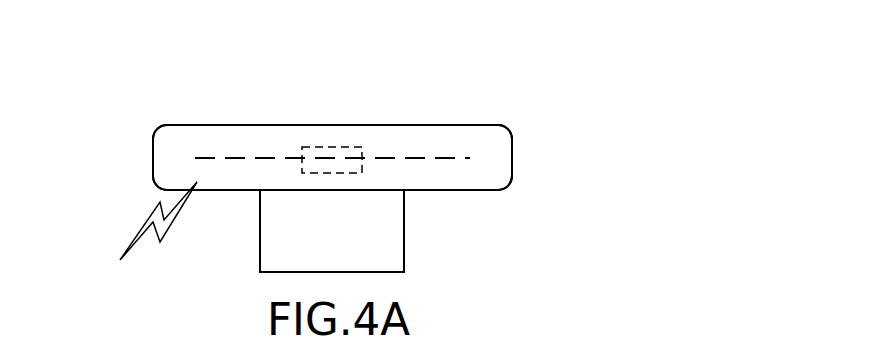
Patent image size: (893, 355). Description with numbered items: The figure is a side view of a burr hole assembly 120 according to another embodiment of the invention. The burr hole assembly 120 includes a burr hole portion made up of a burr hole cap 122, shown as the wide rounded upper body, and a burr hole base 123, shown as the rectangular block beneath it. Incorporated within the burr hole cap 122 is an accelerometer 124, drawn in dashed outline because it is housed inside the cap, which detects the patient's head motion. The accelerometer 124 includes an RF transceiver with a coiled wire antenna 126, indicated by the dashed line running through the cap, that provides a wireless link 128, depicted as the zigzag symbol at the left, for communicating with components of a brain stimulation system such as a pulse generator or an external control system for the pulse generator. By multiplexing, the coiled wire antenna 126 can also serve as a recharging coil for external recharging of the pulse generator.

The burr hole assembly 120 is at (467, 88).
The burr hole cap 122 is at (512, 158).
The burr hole base 123 is at (405, 253).
The accelerometer 124 is at (330, 173).
The coiled wire antenna 126 is at (458, 158).
The wireless link 128 is at (143, 222).